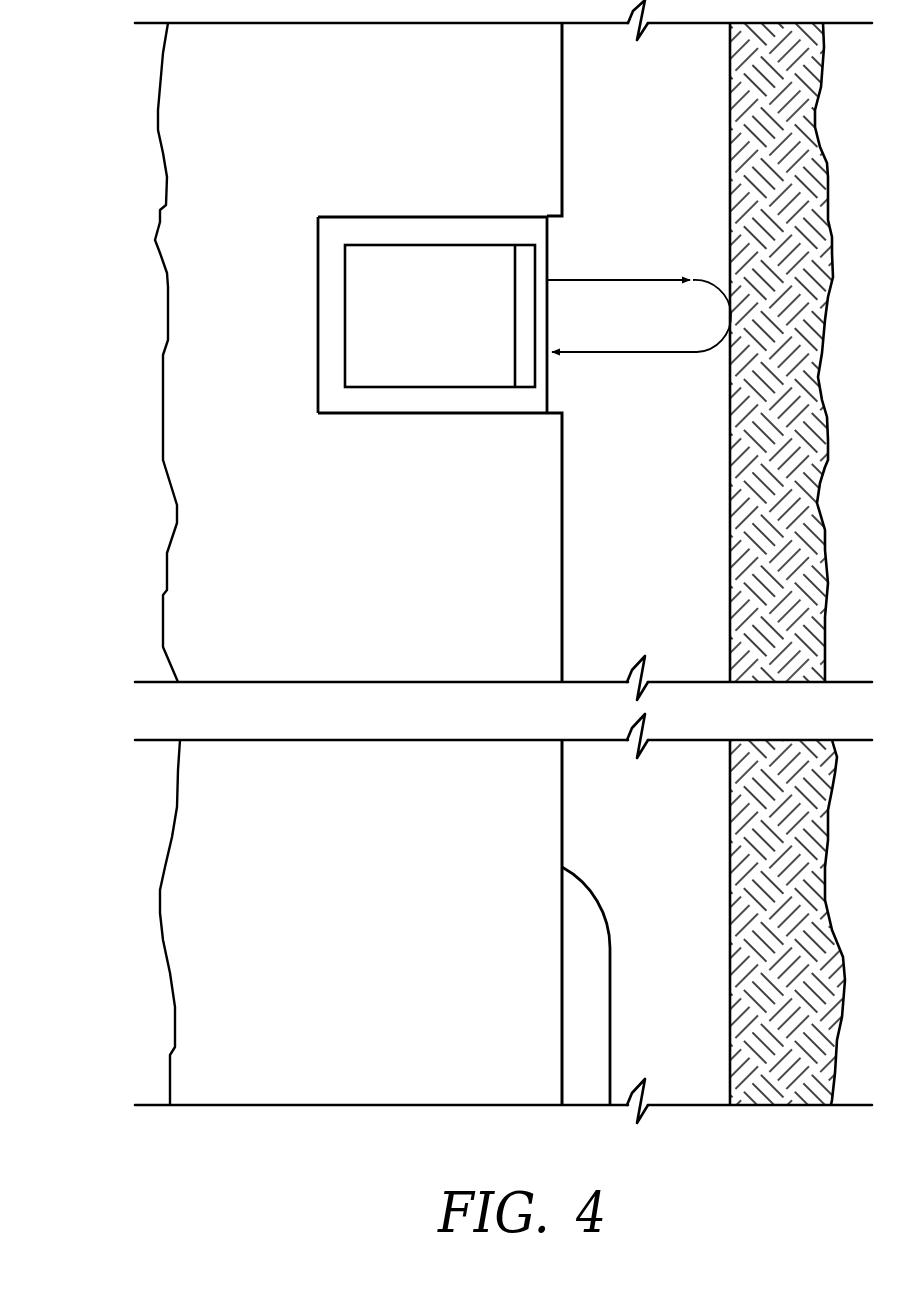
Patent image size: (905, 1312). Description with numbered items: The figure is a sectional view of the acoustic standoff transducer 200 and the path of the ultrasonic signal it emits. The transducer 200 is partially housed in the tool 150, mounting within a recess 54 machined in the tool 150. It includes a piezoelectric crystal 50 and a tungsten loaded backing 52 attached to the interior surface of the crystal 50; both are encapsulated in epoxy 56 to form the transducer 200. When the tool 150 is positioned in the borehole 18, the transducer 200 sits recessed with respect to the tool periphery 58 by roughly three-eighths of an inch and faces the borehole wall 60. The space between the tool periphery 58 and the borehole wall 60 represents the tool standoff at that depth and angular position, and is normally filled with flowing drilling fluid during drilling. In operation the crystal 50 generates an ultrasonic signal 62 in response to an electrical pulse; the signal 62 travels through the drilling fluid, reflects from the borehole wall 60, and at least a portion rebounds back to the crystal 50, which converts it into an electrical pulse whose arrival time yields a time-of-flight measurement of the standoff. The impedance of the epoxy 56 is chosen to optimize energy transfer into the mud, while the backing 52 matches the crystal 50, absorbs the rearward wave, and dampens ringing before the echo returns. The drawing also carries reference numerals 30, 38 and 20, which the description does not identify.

The tool 150 is at (130, 277).
The tool body 30 is at (178, 120).
The tool periphery 58 is at (565, 123).
The transducer 200 is at (430, 211).
The epoxy 56 is at (332, 372).
The recess 54 is at (352, 413).
The tungsten loaded backing 52 is at (388, 317).
The piezoelectric crystal 50 is at (532, 298).
The stabilizer blade 38 is at (632, 985).
The ultrasonic signal 62 is at (633, 280).
The formation 20 is at (748, 508).
The borehole wall 60 is at (730, 418).
The borehole 18 is at (663, 597).